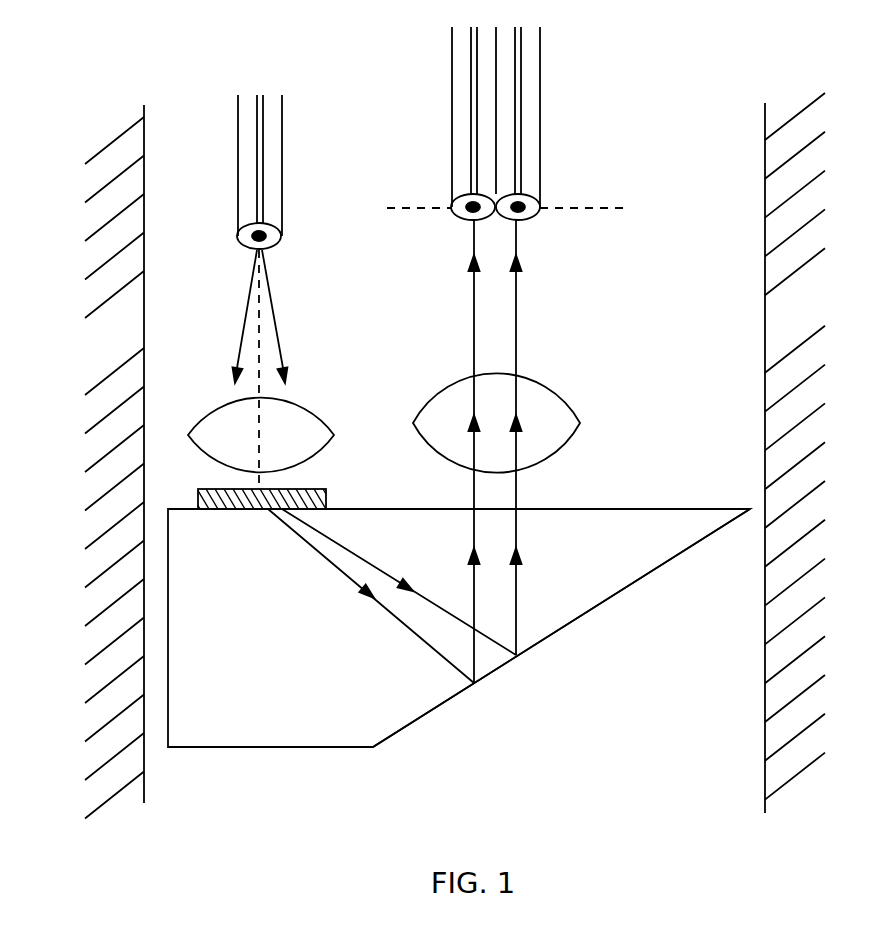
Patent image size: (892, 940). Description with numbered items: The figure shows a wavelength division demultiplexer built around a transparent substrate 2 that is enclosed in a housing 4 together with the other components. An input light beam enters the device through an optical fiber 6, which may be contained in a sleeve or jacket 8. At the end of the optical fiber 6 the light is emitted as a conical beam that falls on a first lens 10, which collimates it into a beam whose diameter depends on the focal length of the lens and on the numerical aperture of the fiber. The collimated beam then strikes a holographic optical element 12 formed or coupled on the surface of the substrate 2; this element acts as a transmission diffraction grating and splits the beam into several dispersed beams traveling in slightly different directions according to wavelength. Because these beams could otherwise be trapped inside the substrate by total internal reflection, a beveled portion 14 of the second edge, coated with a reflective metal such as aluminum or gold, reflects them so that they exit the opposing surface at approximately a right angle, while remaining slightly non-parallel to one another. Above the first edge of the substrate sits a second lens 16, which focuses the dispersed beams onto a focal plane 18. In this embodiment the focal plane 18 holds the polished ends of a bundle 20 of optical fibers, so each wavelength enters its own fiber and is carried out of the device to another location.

The transparent substrate 2 is at (323, 721).
The housing 4 is at (455, 456).
The optical fiber 6 is at (272, 130).
The sleeve or jacket 8 is at (240, 235).
The first lens 10 is at (297, 423).
The holographic optical element 12 is at (326, 495).
The beveled portion 14 is at (561, 628).
The second lens 16 is at (548, 410).
The focal plane 18 is at (507, 208).
The bundle of optical fibers 20 is at (462, 83).